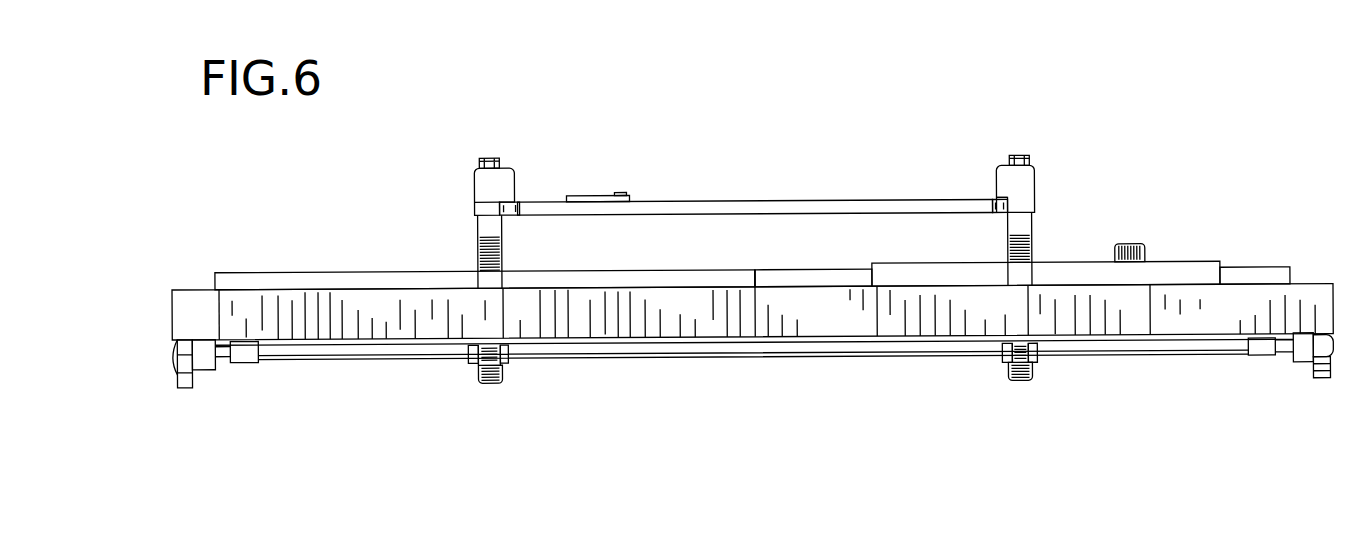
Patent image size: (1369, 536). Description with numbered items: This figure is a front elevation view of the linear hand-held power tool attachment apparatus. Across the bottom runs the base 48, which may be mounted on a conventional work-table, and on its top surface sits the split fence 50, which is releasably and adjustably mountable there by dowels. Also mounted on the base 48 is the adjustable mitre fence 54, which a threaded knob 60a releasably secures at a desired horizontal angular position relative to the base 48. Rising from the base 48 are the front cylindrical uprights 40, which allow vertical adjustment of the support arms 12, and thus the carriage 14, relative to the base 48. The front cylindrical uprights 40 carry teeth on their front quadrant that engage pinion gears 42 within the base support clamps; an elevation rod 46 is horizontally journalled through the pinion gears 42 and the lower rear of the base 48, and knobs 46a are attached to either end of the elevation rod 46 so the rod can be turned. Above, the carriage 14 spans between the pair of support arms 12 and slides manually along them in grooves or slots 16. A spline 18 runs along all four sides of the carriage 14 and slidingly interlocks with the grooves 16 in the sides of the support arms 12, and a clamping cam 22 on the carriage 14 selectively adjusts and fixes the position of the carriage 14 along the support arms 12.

The support arms 12 is at (498, 175).
The carriage 14 is at (708, 205).
The grooves or slots 16 is at (510, 197).
The spline 18 is at (535, 200).
The clamping cam 22 is at (612, 195).
The front cylindrical uprights 40 is at (480, 245).
The pinion gears 42 is at (477, 367).
The elevation rod 46 is at (638, 350).
The knobs 46a is at (175, 363).
The base 48 is at (192, 310).
The split fence 50 is at (362, 278).
The mitre fence 54 is at (1178, 270).
The threaded knob 60a is at (1132, 242).